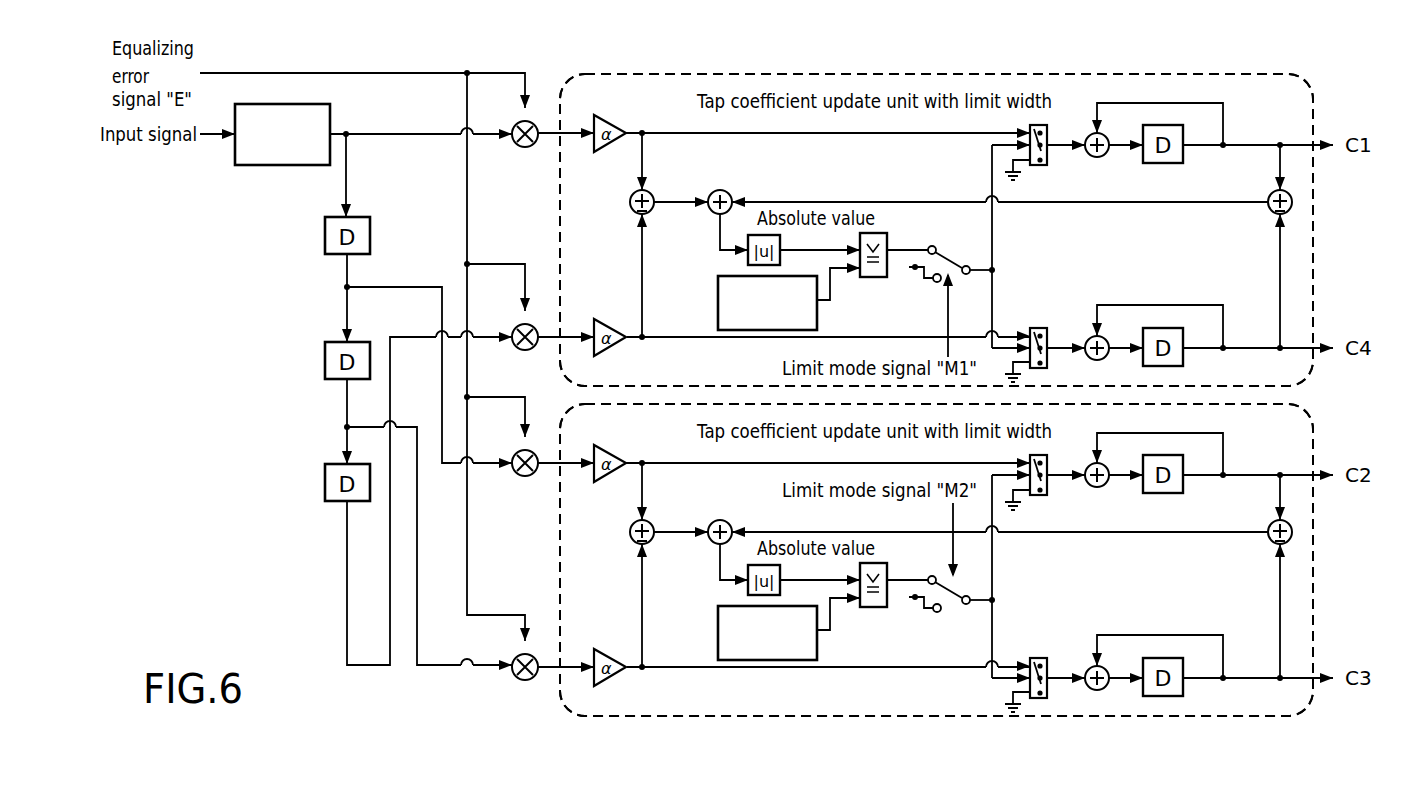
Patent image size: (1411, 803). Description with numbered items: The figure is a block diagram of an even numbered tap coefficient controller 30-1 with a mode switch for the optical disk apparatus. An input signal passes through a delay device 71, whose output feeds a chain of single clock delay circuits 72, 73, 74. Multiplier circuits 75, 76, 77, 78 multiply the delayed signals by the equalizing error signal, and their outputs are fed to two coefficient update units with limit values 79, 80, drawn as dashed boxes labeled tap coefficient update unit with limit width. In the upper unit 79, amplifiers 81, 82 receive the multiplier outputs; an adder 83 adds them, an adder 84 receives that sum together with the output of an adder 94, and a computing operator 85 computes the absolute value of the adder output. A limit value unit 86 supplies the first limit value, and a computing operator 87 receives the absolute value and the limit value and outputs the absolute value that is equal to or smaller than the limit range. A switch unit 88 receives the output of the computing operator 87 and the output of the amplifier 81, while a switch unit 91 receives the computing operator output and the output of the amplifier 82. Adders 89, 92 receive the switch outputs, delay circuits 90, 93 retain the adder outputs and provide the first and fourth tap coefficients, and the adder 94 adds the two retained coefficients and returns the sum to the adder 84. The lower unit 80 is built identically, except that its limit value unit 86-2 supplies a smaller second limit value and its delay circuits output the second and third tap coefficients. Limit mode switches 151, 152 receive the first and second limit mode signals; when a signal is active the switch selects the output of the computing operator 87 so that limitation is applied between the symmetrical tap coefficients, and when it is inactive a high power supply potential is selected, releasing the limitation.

The even numbered tap coefficient controller 30-1 is at (549, 63).
The delay device 71 is at (331, 110).
The single clock delay circuit 72 is at (325, 236).
The single clock delay circuit 73 is at (325, 362).
The single clock delay circuit 74 is at (325, 486).
The multiplier circuit 75 is at (526, 148).
The multiplier circuit 76 is at (530, 351).
The multiplier circuit 77 is at (525, 477).
The multiplier circuit 78 is at (520, 680).
The coefficient update unit with limit value 79 is at (1313, 243).
The coefficient update unit with limit value 80 is at (1313, 573).
The amplifier 81 is at (609, 325).
The amplifier 82 is at (610, 479).
The adder 83 is at (655, 346).
The adder 84 is at (733, 346).
The computing operator 85 is at (732, 420).
The limit value unit 86 is at (718, 296).
The limit value unit 86-2 is at (718, 616).
The computing operator 87 is at (873, 447).
The switch unit 88 is at (1058, 323).
The adder 89 is at (1114, 327).
The delay circuit 90 is at (1184, 323).
The switch unit 91 is at (1038, 486).
The adder 92 is at (1107, 477).
The delay circuit 93 is at (1163, 480).
The adder 94 is at (1255, 380).
The limit mode switch 151 is at (950, 258).
The limit mode switch 152 is at (955, 603).